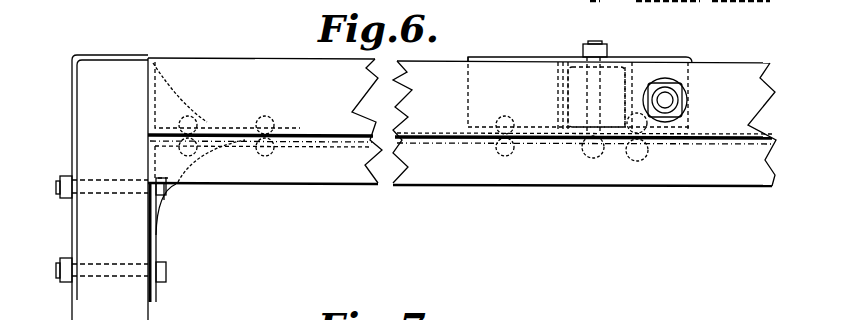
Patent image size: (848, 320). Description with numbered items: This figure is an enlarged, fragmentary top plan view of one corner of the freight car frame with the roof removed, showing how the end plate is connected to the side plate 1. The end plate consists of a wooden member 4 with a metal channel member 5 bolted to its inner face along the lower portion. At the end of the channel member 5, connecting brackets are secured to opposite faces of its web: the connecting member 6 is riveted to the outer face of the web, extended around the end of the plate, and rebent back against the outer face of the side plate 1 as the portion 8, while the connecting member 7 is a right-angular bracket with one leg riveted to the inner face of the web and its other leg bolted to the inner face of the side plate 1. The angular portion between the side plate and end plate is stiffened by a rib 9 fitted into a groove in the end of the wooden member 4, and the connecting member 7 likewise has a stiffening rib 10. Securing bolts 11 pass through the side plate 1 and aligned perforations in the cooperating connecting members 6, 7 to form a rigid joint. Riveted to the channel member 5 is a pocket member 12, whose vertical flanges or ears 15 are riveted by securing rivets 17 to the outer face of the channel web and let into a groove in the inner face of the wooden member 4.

The side plate 1 is at (110, 189).
The wooden member 4 is at (750, 55).
The channel member 5 is at (331, 156).
The connecting member 6 is at (206, 124).
The connecting member 7 is at (152, 240).
The rebent portion 8 is at (73, 146).
The rib 9 is at (192, 111).
The stiffening rib 10 is at (202, 164).
The securing bolts 11 is at (57, 197).
The pocket member 12 is at (513, 57).
The flanges or ears 15 is at (487, 123).
The securing rivets 17 is at (640, 151).